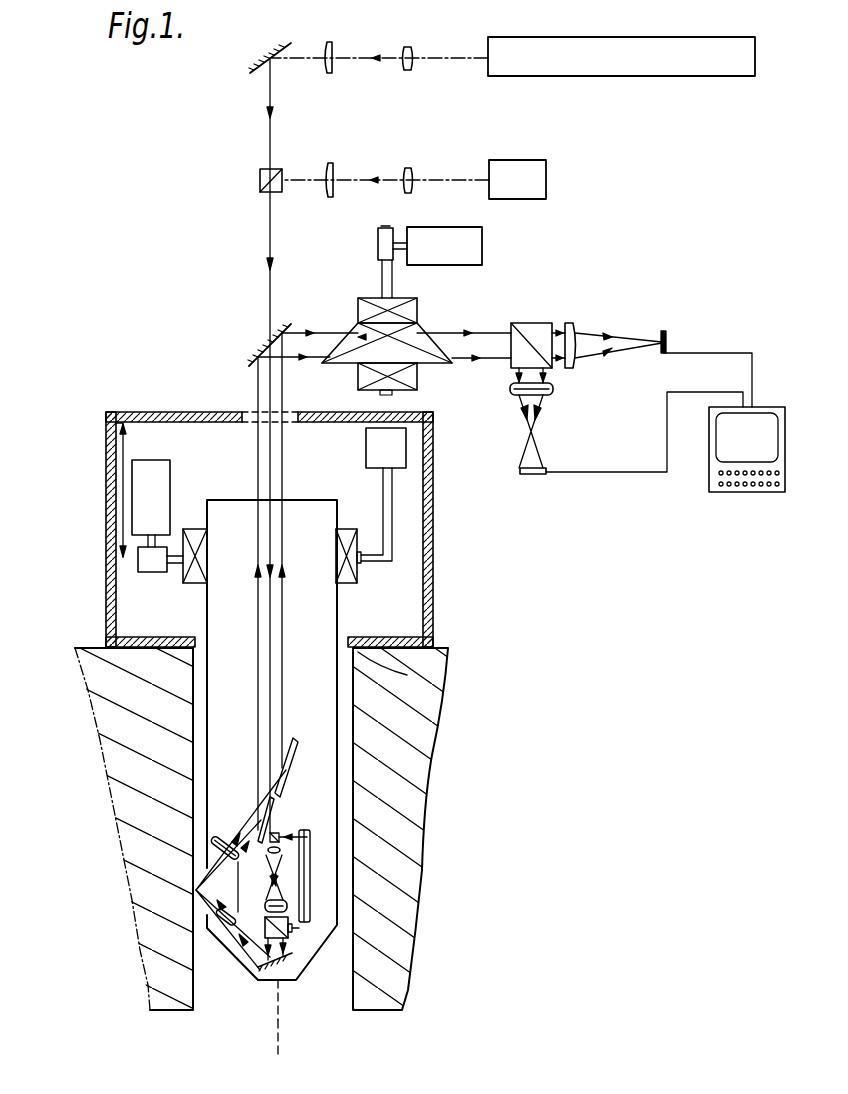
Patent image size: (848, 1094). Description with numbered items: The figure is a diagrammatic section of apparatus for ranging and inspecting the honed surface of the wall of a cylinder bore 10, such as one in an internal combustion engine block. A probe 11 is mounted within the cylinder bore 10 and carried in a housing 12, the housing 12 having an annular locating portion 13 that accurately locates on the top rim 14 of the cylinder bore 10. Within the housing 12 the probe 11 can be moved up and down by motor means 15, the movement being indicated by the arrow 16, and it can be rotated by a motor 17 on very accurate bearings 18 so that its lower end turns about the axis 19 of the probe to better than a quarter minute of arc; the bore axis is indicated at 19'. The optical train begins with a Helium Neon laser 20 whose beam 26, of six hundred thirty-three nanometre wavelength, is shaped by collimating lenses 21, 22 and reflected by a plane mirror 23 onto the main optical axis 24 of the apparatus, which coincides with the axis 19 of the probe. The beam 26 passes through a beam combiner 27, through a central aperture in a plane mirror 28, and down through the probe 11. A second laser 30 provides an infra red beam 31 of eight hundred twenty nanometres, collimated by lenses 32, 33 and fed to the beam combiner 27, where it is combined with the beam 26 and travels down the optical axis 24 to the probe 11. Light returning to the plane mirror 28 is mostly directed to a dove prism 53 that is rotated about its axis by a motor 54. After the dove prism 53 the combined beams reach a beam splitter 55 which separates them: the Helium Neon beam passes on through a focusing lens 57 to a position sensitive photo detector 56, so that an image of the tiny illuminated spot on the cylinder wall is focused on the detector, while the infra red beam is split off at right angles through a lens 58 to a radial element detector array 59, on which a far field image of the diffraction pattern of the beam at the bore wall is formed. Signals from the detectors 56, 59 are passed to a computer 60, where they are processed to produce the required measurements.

The cylinder bore 10 is at (352, 871).
The probe 11 is at (345, 761).
The housing 12 is at (433, 550).
The annular locating portion 13 is at (352, 638).
The top rim 14 is at (407, 675).
The motor means 15 is at (366, 448).
The arrow 16 is at (126, 452).
The motor 17 is at (170, 478).
The bearings 18 is at (347, 528).
The axis of the probe 19 is at (304, 1001).
The bore axis 19' is at (308, 1043).
The Helium Neon laser 20 is at (606, 46).
The collimating lens 21 is at (413, 72).
The collimating lens 22 is at (331, 73).
The plane mirror 23 is at (281, 50).
The main optical axis 24 is at (260, 153).
The beam 26 is at (268, 90).
The beam combiner 27 is at (262, 197).
The plane mirror 28 is at (255, 356).
The second laser 30 is at (548, 172).
The beam 31 is at (472, 180).
The lens 32 is at (412, 172).
The lens 33 is at (333, 170).
The dove prism 53 is at (435, 362).
The motor 54 is at (483, 245).
The beam splitter 55 is at (529, 323).
The position sensitive photo detector 56 is at (667, 330).
The focusing lens 57 is at (575, 323).
The lens 58 is at (553, 390).
The radial element detector array 59 is at (535, 474).
The computer 60 is at (740, 495).